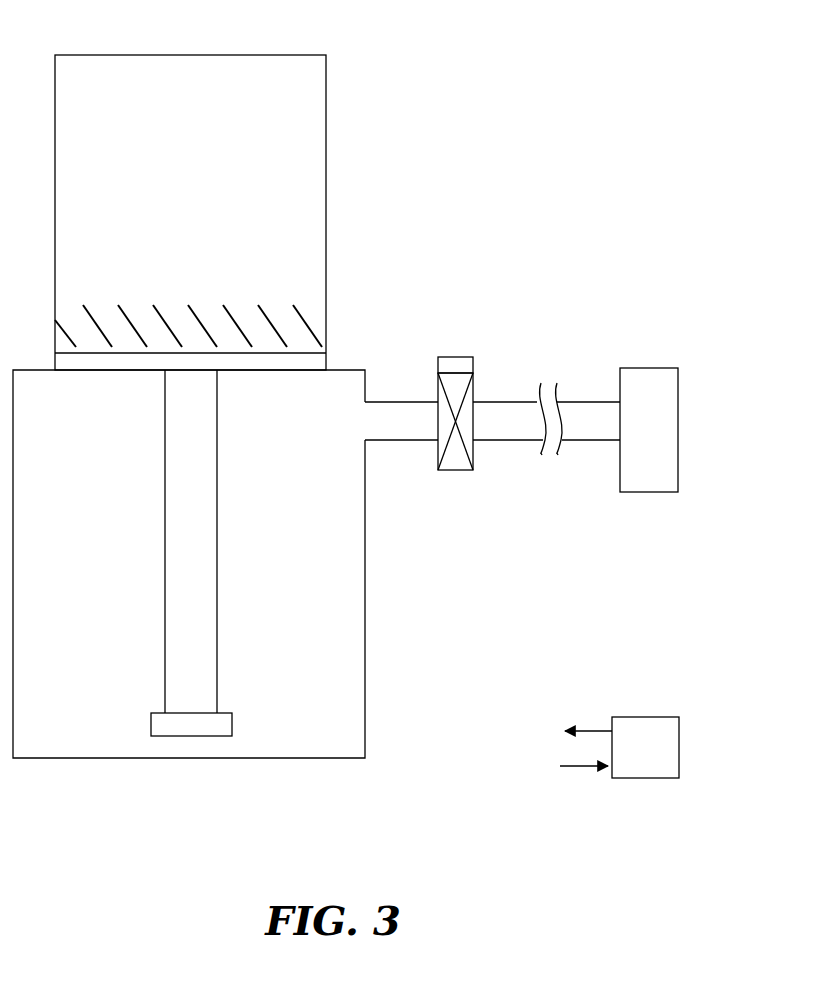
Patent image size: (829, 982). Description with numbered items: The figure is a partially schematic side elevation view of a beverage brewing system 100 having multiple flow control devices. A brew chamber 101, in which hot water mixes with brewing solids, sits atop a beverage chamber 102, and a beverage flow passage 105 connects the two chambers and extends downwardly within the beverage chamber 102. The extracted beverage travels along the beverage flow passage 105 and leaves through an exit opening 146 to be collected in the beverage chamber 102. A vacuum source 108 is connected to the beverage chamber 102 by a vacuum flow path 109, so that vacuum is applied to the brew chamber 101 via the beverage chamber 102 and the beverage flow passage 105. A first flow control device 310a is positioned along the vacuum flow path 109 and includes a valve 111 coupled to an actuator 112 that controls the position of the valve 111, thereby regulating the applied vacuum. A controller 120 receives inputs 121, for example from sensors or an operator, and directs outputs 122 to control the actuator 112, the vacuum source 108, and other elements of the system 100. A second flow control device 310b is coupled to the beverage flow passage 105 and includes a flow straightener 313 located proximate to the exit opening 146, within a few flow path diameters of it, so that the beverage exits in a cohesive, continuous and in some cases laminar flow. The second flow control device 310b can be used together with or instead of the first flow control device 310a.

The beverage brewing system 100 is at (523, 87).
The brew chamber 101 is at (327, 200).
The beverage chamber 102 is at (365, 663).
The beverage flow passage 105 is at (217, 555).
The vacuum source 108 is at (656, 368).
The vacuum flow path 109 is at (405, 398).
The valve 111 is at (437, 462).
The actuator 112 is at (475, 363).
The controller 120 is at (652, 717).
The inputs 121 is at (580, 770).
The outputs 122 is at (592, 725).
The exit opening 146 is at (170, 748).
The first flow control device 310a is at (524, 482).
The second flow control device 310b is at (249, 732).
The flow straightener 313 is at (190, 736).